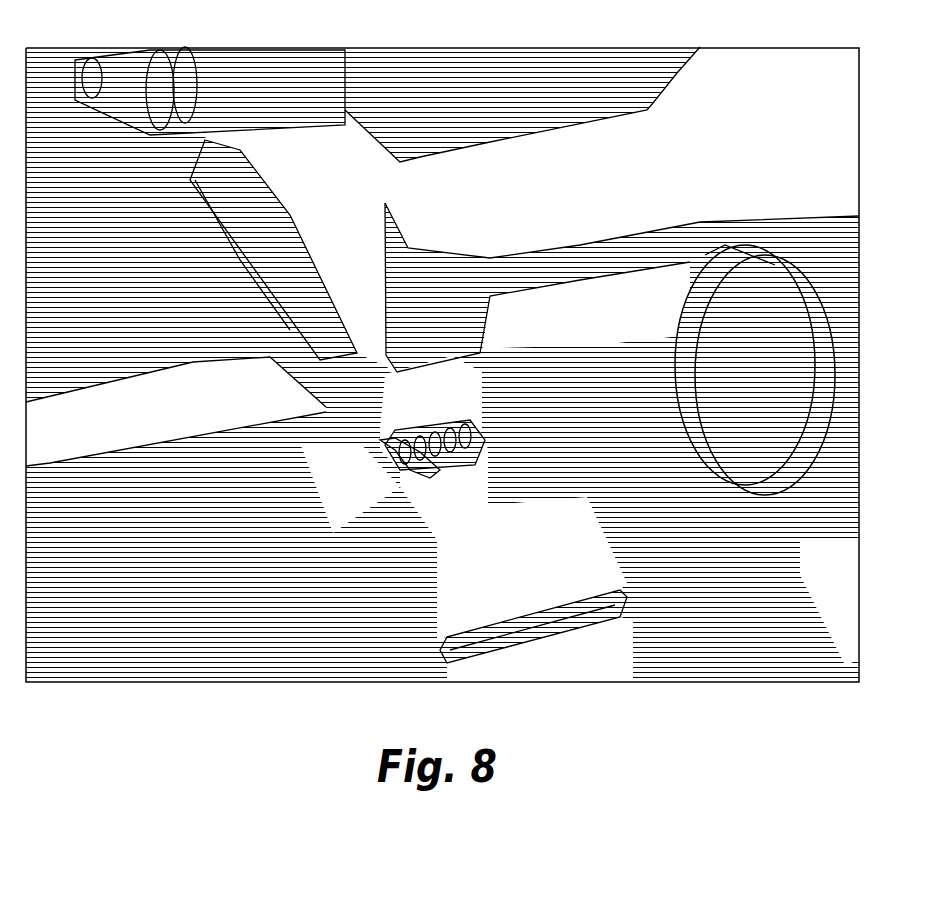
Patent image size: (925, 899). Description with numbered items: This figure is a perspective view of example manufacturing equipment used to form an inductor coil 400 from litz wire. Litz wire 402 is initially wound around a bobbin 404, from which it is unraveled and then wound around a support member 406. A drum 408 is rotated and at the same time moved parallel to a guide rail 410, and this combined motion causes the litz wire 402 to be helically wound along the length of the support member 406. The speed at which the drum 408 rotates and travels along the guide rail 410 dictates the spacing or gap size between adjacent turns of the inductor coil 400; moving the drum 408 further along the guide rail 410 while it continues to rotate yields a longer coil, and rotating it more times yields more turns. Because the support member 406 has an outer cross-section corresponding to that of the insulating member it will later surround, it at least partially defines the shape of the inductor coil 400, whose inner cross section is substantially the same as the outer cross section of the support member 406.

The inductor coil 400 is at (405, 442).
The litz wire 402 is at (190, 135).
The bobbin 404 is at (190, 55).
The support member 406 is at (408, 455).
The drum 408 is at (690, 290).
The guide rail 410 is at (578, 628).